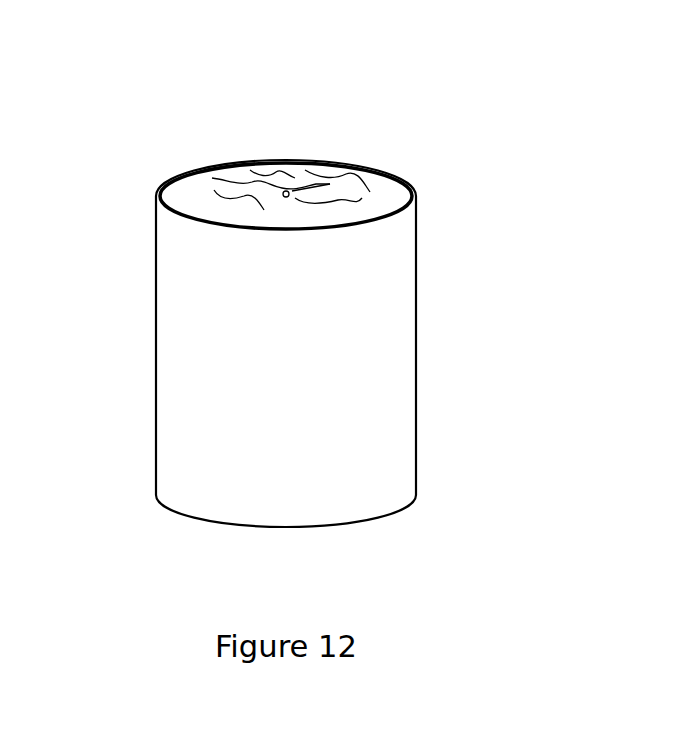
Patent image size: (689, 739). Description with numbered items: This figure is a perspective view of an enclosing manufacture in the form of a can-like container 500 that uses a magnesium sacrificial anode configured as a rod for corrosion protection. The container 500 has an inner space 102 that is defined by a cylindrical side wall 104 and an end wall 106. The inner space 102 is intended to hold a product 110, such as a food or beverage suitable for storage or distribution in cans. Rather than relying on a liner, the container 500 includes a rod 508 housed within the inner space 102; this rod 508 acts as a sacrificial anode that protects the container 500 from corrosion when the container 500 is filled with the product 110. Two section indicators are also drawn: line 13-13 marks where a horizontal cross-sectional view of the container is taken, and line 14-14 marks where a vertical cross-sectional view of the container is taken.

The container 500 is at (108, 62).
The inner space 102 is at (197, 185).
The side wall 104 is at (416, 432).
The end wall 106 is at (397, 515).
The product 110 is at (357, 172).
The rod 508 is at (290, 197).
The line 13- 13 is at (58, 344).
The line 14- 14 is at (286, 125).